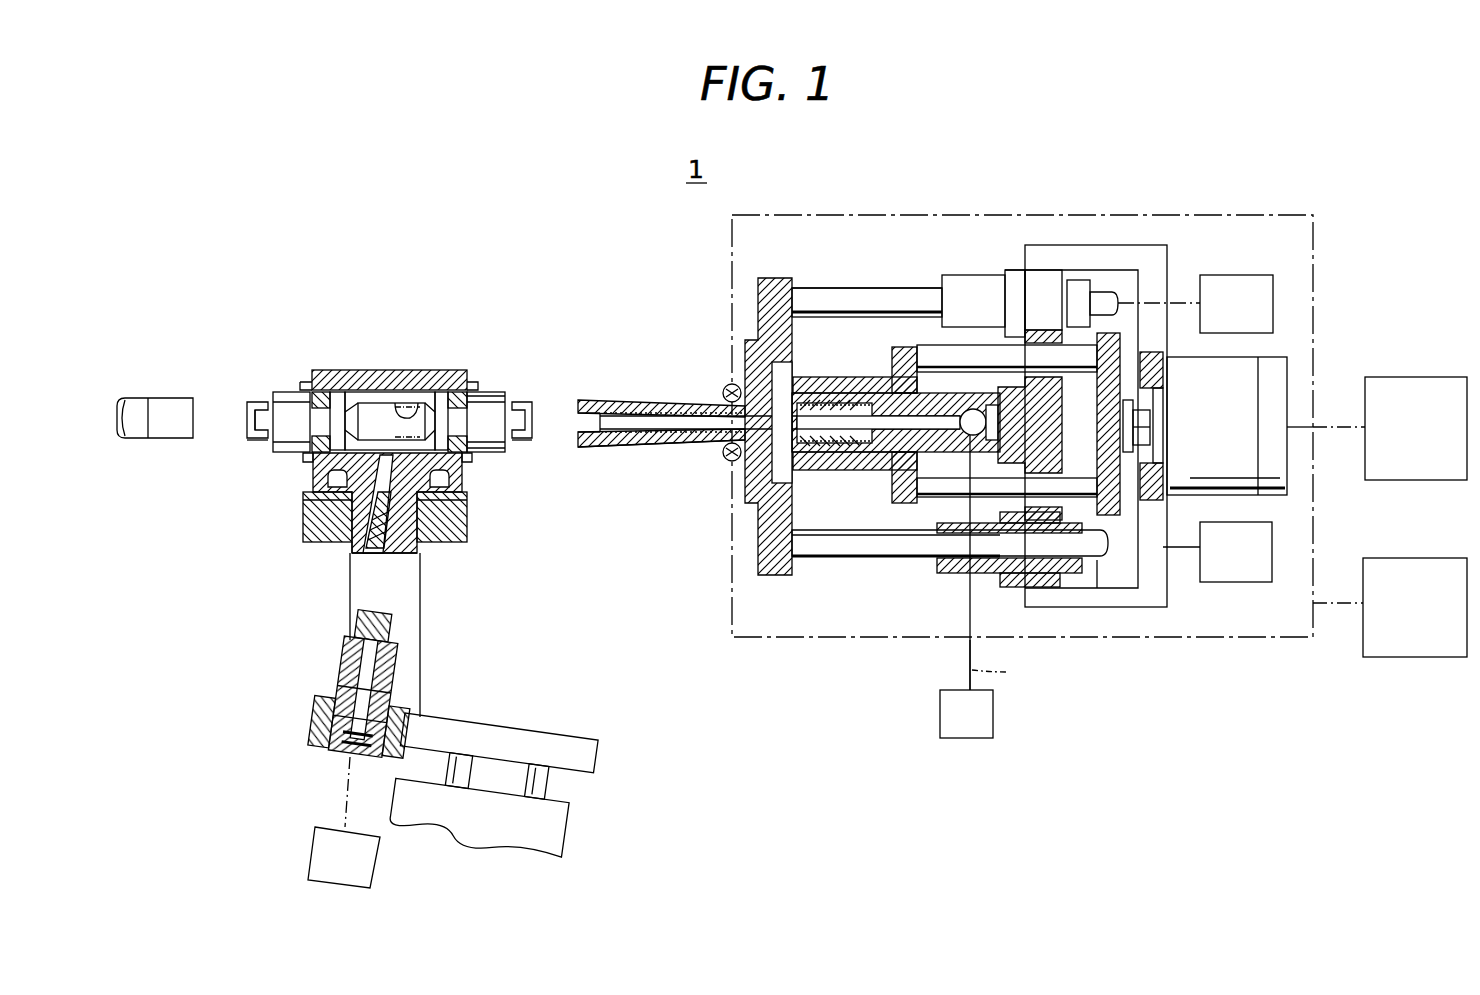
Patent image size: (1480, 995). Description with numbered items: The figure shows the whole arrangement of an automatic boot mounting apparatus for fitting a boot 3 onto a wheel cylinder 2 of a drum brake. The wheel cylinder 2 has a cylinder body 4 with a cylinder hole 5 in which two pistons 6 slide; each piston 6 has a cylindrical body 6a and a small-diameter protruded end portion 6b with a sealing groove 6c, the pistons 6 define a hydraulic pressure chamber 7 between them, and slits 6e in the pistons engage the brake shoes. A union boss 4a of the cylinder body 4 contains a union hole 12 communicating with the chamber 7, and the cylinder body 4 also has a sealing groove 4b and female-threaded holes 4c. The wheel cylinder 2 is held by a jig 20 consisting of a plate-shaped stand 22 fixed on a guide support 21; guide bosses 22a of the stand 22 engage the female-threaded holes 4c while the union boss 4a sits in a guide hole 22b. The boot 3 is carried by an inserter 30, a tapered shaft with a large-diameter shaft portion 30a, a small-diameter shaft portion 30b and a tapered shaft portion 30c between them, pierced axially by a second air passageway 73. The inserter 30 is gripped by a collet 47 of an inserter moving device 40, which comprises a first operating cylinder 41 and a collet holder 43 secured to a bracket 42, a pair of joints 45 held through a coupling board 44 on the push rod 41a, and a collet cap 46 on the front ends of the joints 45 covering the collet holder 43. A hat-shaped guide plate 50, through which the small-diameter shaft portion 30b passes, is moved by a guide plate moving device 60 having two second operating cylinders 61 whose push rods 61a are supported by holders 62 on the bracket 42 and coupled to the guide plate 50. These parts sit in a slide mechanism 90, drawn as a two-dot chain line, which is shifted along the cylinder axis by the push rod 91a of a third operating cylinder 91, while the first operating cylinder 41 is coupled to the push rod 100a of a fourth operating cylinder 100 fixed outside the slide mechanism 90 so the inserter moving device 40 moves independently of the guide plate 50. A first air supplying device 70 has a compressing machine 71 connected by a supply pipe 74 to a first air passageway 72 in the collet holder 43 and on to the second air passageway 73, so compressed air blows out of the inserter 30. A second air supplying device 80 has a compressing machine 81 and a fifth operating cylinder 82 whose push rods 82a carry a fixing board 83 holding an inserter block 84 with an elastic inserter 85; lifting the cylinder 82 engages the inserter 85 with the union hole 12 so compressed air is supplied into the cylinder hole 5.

The wheel cylinder 2 is at (372, 368).
The boot 3 is at (724, 390).
The cylinder body 4 is at (325, 372).
The union boss 4a is at (408, 556).
The sealing groove 4b is at (305, 390).
The female-threaded holes 4c is at (444, 390).
The cylinder hole 5 is at (405, 405).
The pistons 6 is at (283, 388).
The cylindrical body 6a is at (500, 392).
The protruded end portion 6b is at (253, 441).
The sealing groove 6c is at (275, 396).
The slits 6e is at (248, 414).
The hydraulic pressure chamber 7 is at (416, 398).
The union hole 12 is at (388, 560).
The jig 20 is at (343, 590).
The guide support 21 is at (410, 668).
The plate-shaped stand 22 is at (467, 537).
The guide bosses 22a is at (310, 500).
The guide hole 22b is at (352, 553).
The inserter 30 is at (140, 390).
The large-diameter shaft portion 30a is at (176, 396).
The small-diameter shaft portion 30b is at (860, 455).
The tapered shaft portion 30c is at (665, 442).
The inserter moving device 40 is at (853, 370).
The first operating cylinder 41 is at (1265, 395).
The push rod 41a is at (1152, 417).
The bracket 42 is at (1098, 244).
The collet holder 43 is at (975, 420).
The coupling board 44 is at (1110, 606).
The joints 45 is at (937, 345).
The collet cap 46 is at (818, 380).
The collet 47 is at (820, 540).
The guide plate 50 is at (777, 284).
The guide plate moving device 60 is at (850, 562).
The second operating cylinders 61 is at (1240, 273).
The push rods 61a is at (823, 290).
The holders 62 is at (1000, 273).
The first air supplying device 70 is at (960, 652).
The compressing machine 71 is at (955, 720).
The first air passageway 72 is at (985, 560).
The second air passageway 73 is at (660, 415).
The supply pipe 74 is at (1008, 674).
The second air supplying device 80 is at (343, 784).
The compressing machine 81 is at (325, 845).
The fifth operating cylinder 82 is at (495, 815).
The push rods 82a is at (560, 790).
The fixing board 83 is at (550, 740).
The inserter block 84 is at (340, 682).
The inserter 85 is at (350, 622).
The slide mechanism 90 is at (1300, 214).
The third operating cylinder 91 is at (1438, 642).
The push rod 91a is at (1340, 606).
The fourth operating cylinder 100 is at (1440, 395).
The push rod 100a is at (1340, 422).